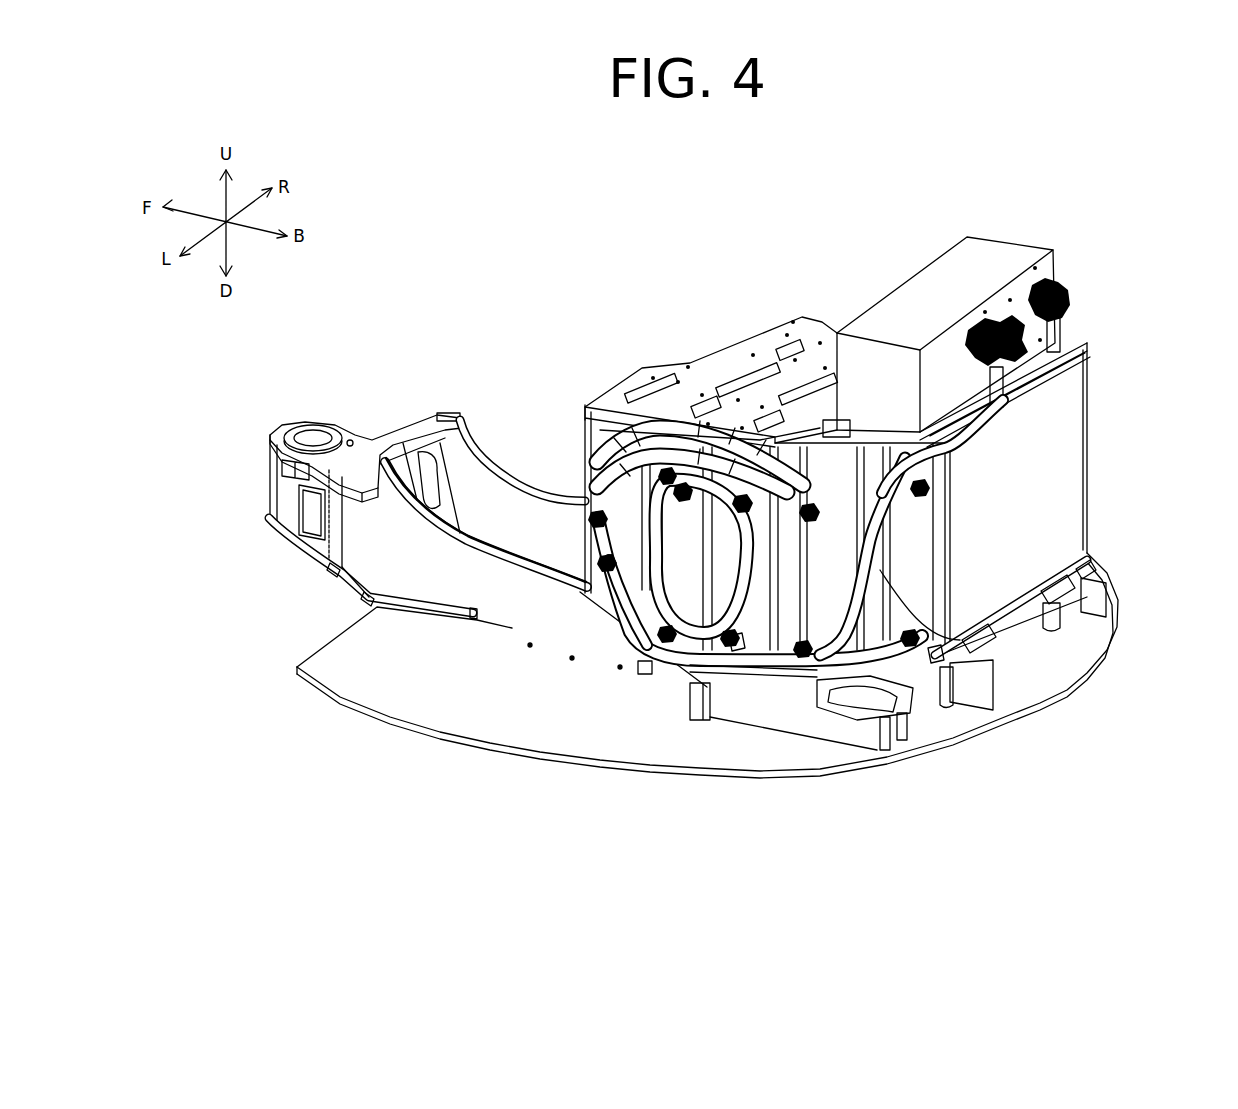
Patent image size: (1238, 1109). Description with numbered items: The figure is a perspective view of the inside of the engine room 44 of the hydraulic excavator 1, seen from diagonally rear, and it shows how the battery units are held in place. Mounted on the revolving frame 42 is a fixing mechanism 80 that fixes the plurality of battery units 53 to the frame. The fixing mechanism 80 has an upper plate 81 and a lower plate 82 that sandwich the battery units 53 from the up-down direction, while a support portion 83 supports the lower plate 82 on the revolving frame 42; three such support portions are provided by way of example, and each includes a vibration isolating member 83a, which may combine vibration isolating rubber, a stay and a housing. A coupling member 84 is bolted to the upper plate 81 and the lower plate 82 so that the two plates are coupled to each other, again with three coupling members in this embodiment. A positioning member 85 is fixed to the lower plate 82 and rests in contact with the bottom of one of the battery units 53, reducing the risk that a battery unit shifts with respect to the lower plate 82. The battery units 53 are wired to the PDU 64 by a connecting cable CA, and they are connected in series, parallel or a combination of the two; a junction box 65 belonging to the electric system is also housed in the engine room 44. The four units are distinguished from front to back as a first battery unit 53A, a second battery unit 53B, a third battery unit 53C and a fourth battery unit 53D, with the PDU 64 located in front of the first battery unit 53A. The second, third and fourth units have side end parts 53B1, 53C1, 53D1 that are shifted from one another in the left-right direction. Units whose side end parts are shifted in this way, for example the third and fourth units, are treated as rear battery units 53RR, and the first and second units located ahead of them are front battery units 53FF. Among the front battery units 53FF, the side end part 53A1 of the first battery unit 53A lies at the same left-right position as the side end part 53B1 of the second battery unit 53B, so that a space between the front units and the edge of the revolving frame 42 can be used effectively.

The hydraulic excavator 1 is at (503, 253).
The engine room 44 is at (458, 318).
The revolving frame 42 is at (360, 697).
The PDU (Power Drive Unit) 64 is at (588, 440).
The fixing mechanism 80 is at (688, 345).
The upper plate 81 is at (723, 373).
The junction box 65 is at (925, 292).
The battery unit 53 is at (777, 639).
The first battery unit 53A is at (657, 583).
The second battery unit 53B is at (600, 586).
The third battery unit 53C is at (830, 553).
The fourth battery unit 53D is at (1068, 428).
The front battery unit 53FF is at (549, 653).
The rear battery unit 53RR is at (943, 639).
The side end part 53A1 is at (690, 643).
The side end part 53B1 is at (733, 640).
The side end part 53C1 is at (822, 600).
The side end part 53D1 is at (935, 600).
The lower plate 82 is at (880, 672).
The support portion 83 is at (858, 712).
The vibration isolating member 83a is at (867, 718).
The coupling member 84 is at (990, 633).
The positioning member 85 is at (1087, 555).
The connecting cable CA is at (652, 428).